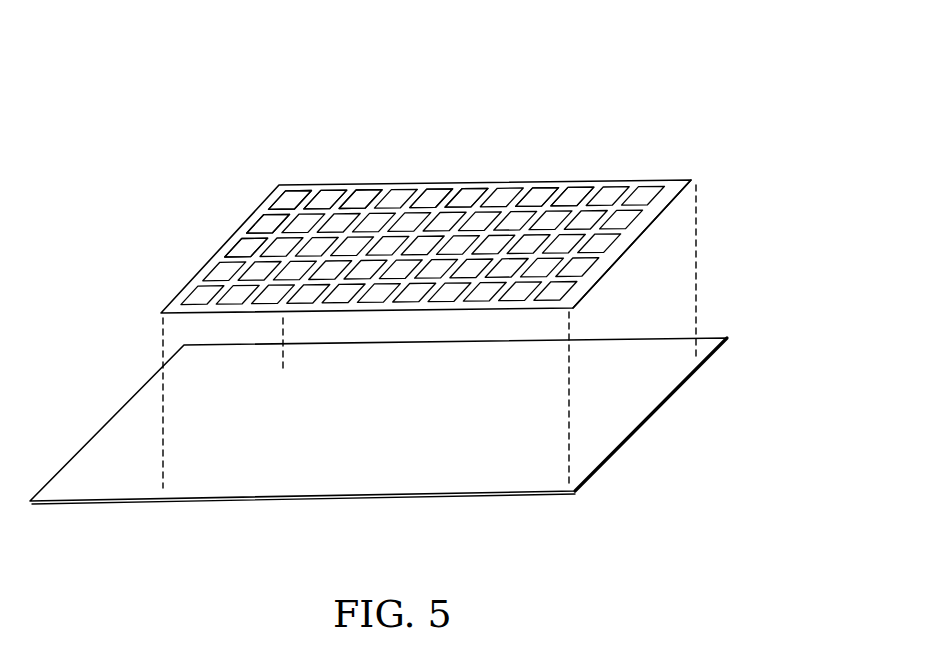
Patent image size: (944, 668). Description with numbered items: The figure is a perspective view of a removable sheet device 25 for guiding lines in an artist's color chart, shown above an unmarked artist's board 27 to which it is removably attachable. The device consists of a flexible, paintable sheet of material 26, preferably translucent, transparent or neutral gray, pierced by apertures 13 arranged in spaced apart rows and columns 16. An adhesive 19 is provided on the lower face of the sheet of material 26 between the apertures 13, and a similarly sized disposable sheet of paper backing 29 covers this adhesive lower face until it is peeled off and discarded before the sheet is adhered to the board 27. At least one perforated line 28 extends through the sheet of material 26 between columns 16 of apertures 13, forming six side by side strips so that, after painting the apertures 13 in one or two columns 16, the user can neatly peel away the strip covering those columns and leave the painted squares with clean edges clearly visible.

The removable sheet device 25 is at (391, 253).
The sheet of material 26 is at (427, 207).
The apertures 13 is at (358, 198).
The perforated line 28 is at (493, 197).
The columns 16 is at (587, 197).
The paper backing 29 is at (215, 272).
The adhesive 19 is at (657, 221).
The artist's board 27 is at (372, 419).